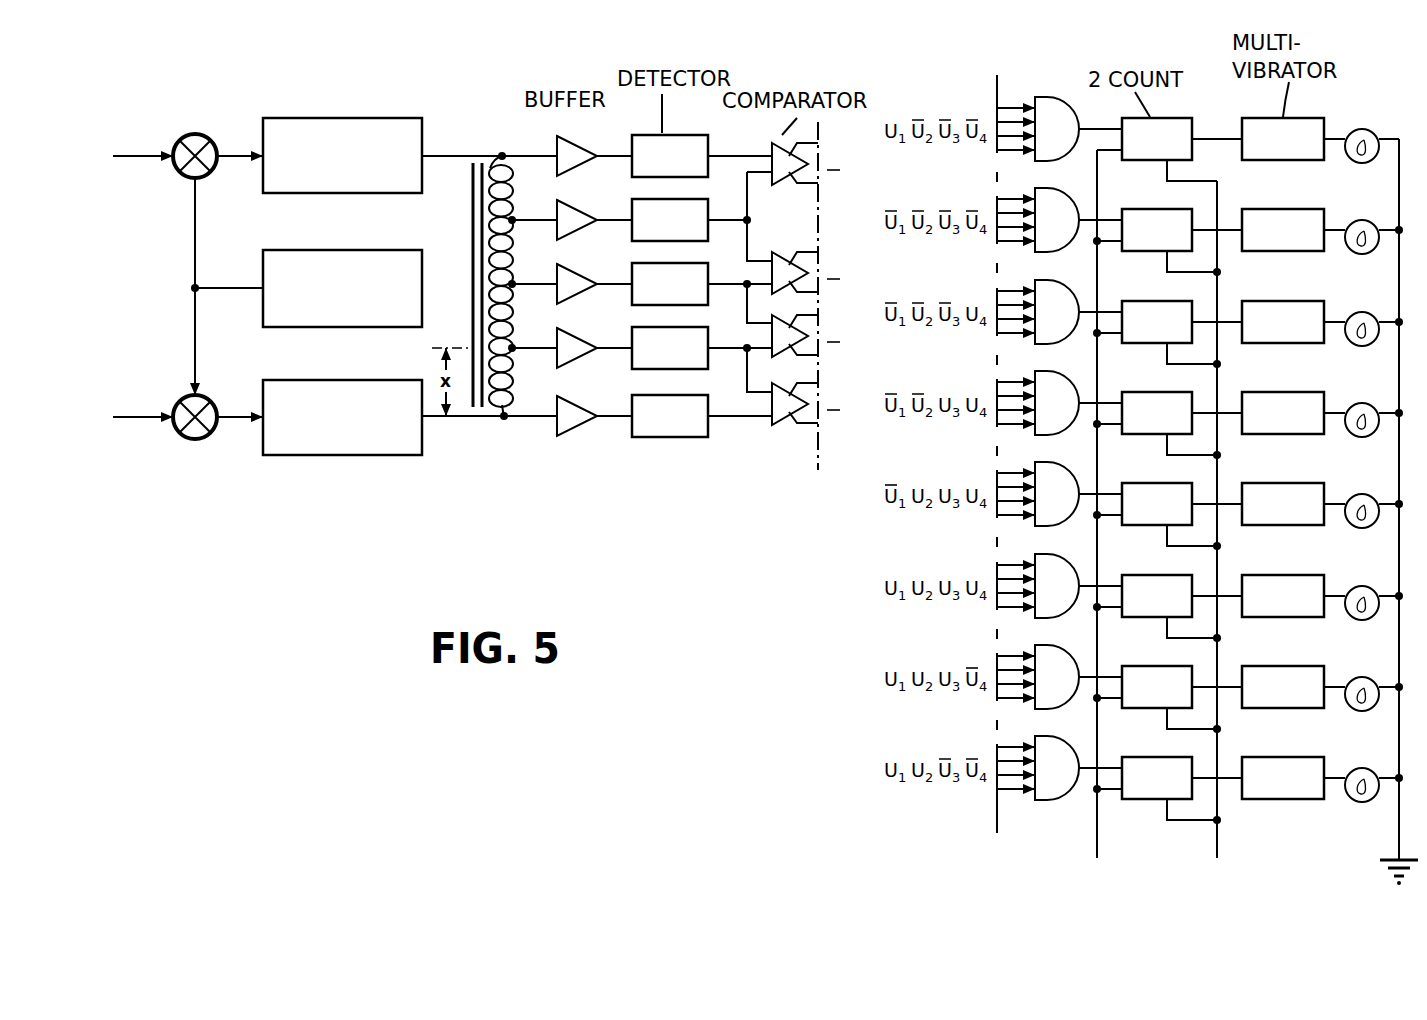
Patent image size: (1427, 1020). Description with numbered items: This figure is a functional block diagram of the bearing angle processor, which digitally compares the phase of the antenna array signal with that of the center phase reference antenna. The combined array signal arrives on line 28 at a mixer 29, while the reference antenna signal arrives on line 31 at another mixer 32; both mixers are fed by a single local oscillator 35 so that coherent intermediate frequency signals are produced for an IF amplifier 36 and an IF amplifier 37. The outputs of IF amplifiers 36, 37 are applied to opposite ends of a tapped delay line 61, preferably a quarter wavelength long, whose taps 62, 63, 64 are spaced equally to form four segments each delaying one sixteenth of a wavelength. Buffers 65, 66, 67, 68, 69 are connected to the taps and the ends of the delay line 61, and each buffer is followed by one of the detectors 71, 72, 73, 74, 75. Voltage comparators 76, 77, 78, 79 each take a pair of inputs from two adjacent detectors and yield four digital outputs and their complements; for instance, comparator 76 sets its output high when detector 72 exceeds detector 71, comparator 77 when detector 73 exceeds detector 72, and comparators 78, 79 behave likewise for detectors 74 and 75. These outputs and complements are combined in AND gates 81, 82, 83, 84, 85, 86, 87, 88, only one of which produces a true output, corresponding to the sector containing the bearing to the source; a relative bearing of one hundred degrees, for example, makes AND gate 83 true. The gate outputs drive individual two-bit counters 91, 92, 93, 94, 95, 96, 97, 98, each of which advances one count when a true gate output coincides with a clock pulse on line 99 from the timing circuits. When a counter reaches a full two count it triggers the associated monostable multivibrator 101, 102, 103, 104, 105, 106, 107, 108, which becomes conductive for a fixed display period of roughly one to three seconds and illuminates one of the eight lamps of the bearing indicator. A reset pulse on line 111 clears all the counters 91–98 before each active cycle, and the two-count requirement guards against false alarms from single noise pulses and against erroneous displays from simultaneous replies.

The line 28 is at (131, 155).
The mixer 29 is at (199, 133).
The line 31 is at (141, 419).
The mixer 32 is at (204, 438).
The local oscillator 35 is at (330, 250).
The IF amplifier 36 is at (318, 117).
The IF amplifier 37 is at (332, 457).
The tapped delay line 61 is at (498, 158).
The tap 62 is at (514, 346).
The tap 63 is at (514, 282).
The tap 64 is at (514, 218).
The buffer 65 is at (592, 411).
The buffer 66 is at (592, 343).
The buffer 67 is at (592, 279).
The buffer 68 is at (592, 215).
The buffer 69 is at (592, 151).
The detector 71 is at (693, 392).
The detector 72 is at (693, 328).
The detector 73 is at (690, 264).
The detector 74 is at (690, 200).
The detector 75 is at (709, 134).
The voltage comparator 76 is at (785, 424).
The voltage comparator 77 is at (791, 352).
The voltage comparator 78 is at (781, 256).
The voltage comparator 79 is at (782, 181).
The AND gate 81 is at (1070, 791).
The AND gate 82 is at (1070, 700).
The AND gate 83 is at (1070, 609).
The AND gate 84 is at (1070, 517).
The AND gate 85 is at (1070, 426).
The AND gate 86 is at (1070, 335).
The AND gate 87 is at (1070, 243).
The AND gate 88 is at (1070, 152).
The 2-bit counter 91 is at (1147, 800).
The 2-bit counter 92 is at (1147, 709).
The 2-bit counter 93 is at (1147, 618).
The 2-bit counter 94 is at (1147, 526).
The 2-bit counter 95 is at (1147, 435).
The 2-bit counter 96 is at (1147, 344).
The 2-bit counter 97 is at (1147, 252).
The 2-bit counter 98 is at (1147, 161).
The clock pulse line 99 is at (1096, 847).
The monostable multivibrator 101 is at (1274, 800).
The monostable multivibrator 102 is at (1274, 709).
The monostable multivibrator 103 is at (1274, 618).
The monostable multivibrator 104 is at (1274, 526).
The monostable multivibrator 105 is at (1274, 435).
The monostable multivibrator 106 is at (1274, 344).
The monostable multivibrator 107 is at (1274, 252).
The monostable multivibrator 108 is at (1274, 161).
The reset pulse line 111 is at (1216, 846).